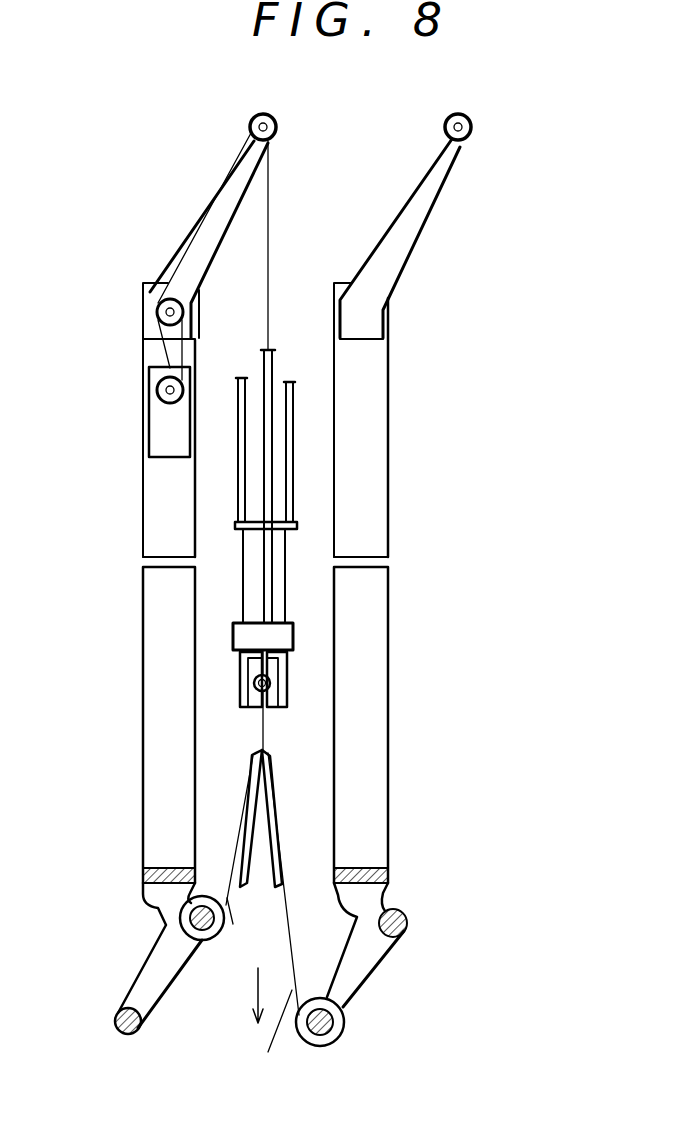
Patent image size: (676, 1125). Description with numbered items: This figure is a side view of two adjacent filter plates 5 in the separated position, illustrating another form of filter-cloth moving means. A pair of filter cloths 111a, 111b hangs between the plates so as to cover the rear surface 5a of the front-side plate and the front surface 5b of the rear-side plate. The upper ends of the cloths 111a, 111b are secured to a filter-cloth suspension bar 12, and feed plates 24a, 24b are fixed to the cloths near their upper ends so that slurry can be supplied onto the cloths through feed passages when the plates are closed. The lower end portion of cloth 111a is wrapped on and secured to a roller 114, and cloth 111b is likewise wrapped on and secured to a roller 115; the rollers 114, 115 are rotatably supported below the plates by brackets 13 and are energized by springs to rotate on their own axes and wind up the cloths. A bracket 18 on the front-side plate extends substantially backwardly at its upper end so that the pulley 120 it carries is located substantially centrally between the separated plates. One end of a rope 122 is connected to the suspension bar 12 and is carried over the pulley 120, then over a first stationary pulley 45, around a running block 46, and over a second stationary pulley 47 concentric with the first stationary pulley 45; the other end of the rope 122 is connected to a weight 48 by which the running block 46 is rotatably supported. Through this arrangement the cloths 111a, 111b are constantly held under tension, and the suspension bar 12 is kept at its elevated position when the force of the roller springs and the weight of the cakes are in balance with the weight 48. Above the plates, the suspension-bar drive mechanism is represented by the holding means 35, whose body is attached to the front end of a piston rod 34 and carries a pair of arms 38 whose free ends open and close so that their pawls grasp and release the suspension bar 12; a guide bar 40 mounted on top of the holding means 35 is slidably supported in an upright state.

The pulley 120 is at (263, 114).
The rope 122 is at (210, 210).
The bracket 18 is at (201, 243).
The rear surface 5a is at (203, 510).
The front surface 5b is at (332, 507).
The first stationary pulley 45 is at (130, 318).
The second stationary pulley 47 is at (160, 307).
The running block 46 is at (160, 392).
The weight 48 is at (158, 447).
The piston rod 34 is at (274, 365).
The guide bar 40 is at (238, 455).
The filter-cloth suspension-bar holding means 35 is at (277, 595).
The arms 38 is at (246, 662).
The filter-cloth suspension bar 12 is at (256, 689).
The filter plate 5 is at (155, 640).
The feed plate 24a is at (242, 826).
The feed plate 24b is at (273, 831).
The roller 114 is at (187, 913).
The bracket 13 is at (155, 960).
The roller 115 is at (114, 1017).
The filter cloth 111a is at (249, 927).
The filter cloth 111b is at (270, 1038).